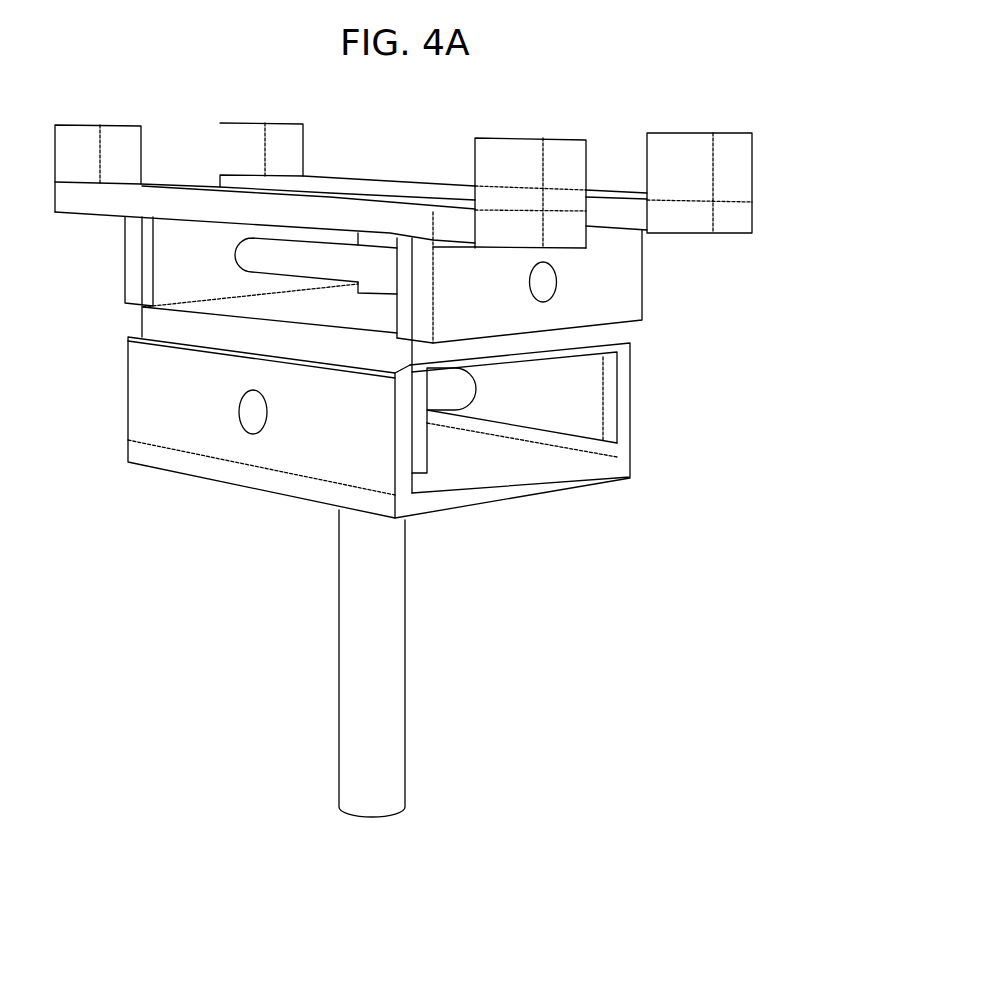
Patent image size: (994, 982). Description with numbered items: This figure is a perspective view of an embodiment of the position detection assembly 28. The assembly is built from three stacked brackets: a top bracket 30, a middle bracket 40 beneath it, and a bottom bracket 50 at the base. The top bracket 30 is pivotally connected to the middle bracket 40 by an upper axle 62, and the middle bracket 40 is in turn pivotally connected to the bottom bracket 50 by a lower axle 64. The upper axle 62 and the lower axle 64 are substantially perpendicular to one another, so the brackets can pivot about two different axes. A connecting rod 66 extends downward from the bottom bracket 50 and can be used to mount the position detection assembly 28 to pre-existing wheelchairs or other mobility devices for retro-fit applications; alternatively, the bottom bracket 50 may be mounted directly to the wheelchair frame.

The position detection assembly 28 is at (830, 117).
The top bracket 30 is at (205, 77).
The middle bracket 40 is at (655, 332).
The bottom bracket 50 is at (217, 503).
The upper axle 62 is at (543, 302).
The lower axle 64 is at (240, 411).
The connecting rod 66 is at (405, 741).